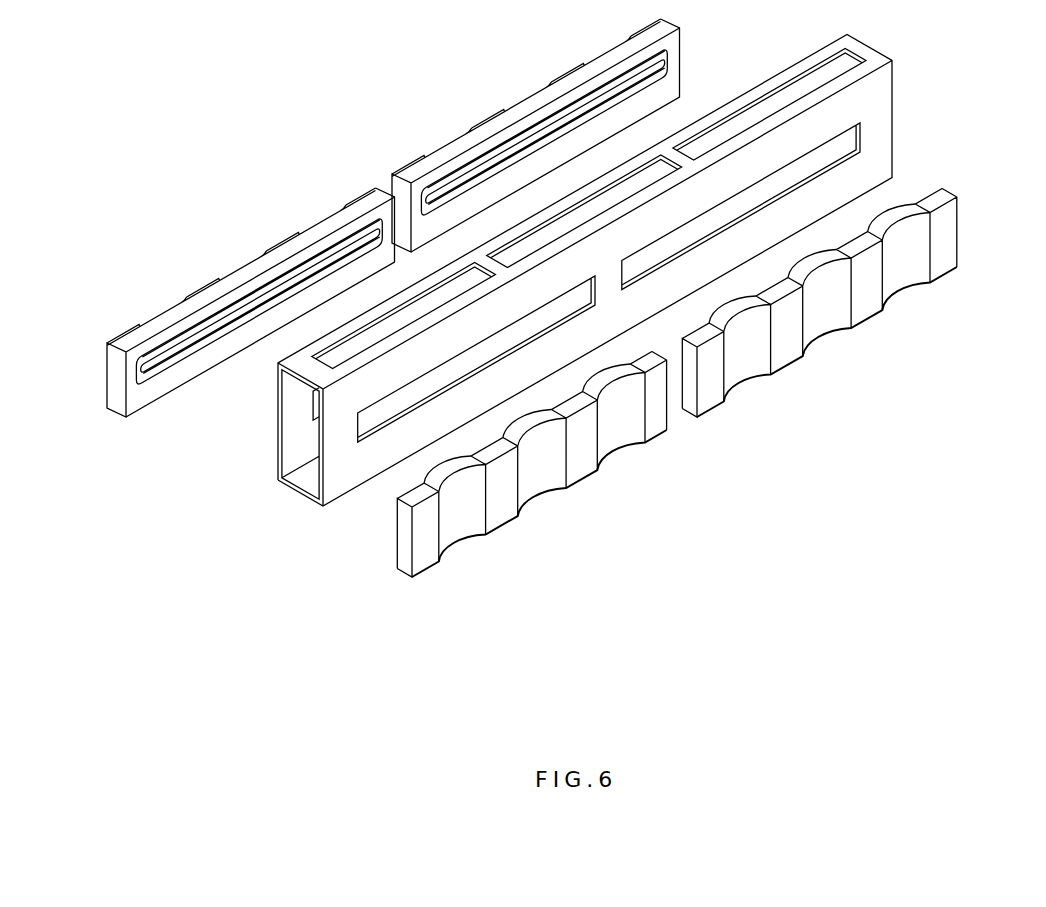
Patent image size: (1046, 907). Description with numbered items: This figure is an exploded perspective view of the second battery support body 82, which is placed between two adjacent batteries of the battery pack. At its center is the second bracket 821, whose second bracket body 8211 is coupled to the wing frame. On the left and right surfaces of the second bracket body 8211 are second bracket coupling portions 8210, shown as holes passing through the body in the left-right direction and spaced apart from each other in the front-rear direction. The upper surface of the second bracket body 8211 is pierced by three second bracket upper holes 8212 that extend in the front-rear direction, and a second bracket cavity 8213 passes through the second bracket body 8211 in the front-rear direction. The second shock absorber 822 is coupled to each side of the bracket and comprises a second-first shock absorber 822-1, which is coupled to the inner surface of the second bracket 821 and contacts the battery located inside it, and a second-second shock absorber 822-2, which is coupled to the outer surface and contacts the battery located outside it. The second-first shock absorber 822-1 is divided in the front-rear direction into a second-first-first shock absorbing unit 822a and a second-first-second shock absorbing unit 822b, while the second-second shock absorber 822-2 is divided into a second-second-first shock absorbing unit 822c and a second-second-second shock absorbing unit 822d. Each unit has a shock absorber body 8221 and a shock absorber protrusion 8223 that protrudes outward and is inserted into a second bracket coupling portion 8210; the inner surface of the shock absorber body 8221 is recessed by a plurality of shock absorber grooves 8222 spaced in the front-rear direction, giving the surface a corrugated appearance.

The second battery support body 82 is at (500, 355).
The second bracket 821 is at (532, 303).
The second bracket coupling portion 8210 is at (368, 438).
The second bracket body 8211 is at (281, 442).
The second bracket upper hole 8212 is at (297, 370).
The second bracket cavity 8213 is at (297, 405).
The second shock absorber 822 is at (500, 319).
The second-first shock absorber 822-1 is at (538, 404).
The second-second shock absorber 822-2 is at (382, 279).
The second-first-first shock absorbing unit 822a is at (546, 486).
The second-first-second shock absorbing unit 822b is at (737, 410).
The second-second-first shock absorbing unit 822c is at (251, 267).
The second-second-second shock absorbing unit 822d is at (440, 145).
The second-first shock absorber body 8221 is at (589, 466).
The second-first shock absorber groove 8222 is at (466, 528).
The second-first shock absorber protrusion 8223 is at (232, 330).